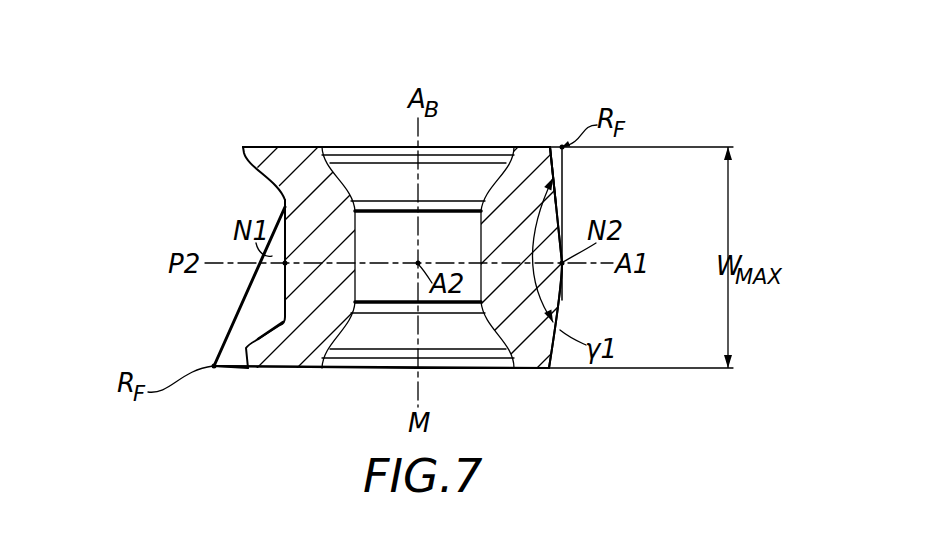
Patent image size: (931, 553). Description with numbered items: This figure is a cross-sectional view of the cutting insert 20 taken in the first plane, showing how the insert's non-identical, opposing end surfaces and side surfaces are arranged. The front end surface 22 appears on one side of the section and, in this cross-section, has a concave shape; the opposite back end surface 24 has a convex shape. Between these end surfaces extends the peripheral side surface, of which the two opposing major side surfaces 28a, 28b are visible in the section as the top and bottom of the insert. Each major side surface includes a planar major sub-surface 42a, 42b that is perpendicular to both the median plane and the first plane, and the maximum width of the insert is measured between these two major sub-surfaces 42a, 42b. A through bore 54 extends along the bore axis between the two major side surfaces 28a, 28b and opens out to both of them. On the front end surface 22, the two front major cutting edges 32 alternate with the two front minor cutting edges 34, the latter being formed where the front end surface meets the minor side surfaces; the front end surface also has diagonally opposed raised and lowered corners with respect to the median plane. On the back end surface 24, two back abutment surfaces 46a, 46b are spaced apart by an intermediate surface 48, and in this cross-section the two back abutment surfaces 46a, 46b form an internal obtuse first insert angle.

The cutting insert 20 is at (570, 108).
The front end surface 22 is at (240, 324).
The back end surface 24 is at (564, 201).
The major side surface 28a is at (524, 147).
The major side surface 28b is at (537, 382).
The front major cutting edge 32 is at (243, 148).
The front minor cutting edge 34 is at (243, 308).
The planar major sub-surface 42a is at (305, 147).
The planar major sub-surface 42b is at (283, 368).
The back abutment surface 46a is at (563, 172).
The back abutment surface 46b is at (565, 318).
The intermediate surface 48 is at (563, 275).
The through bore 54 is at (388, 181).